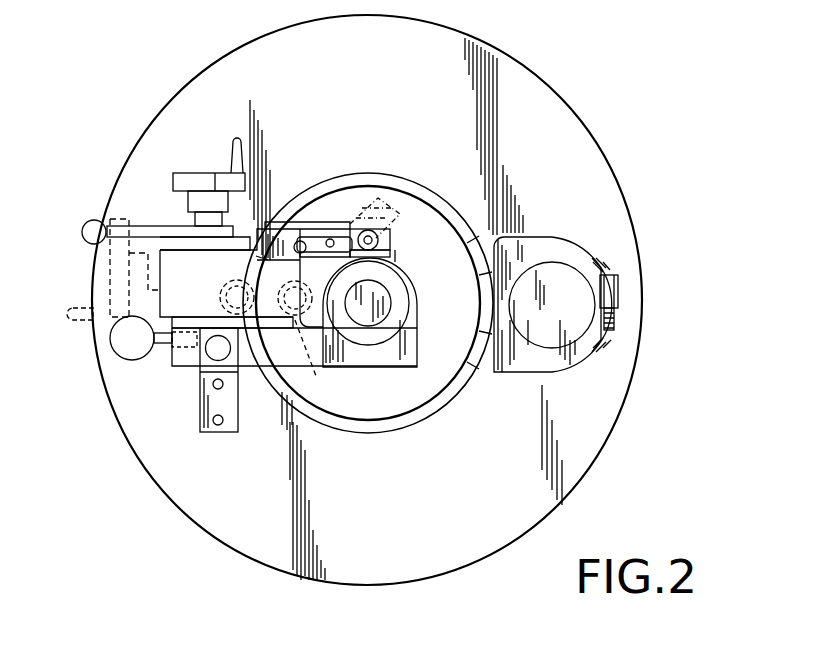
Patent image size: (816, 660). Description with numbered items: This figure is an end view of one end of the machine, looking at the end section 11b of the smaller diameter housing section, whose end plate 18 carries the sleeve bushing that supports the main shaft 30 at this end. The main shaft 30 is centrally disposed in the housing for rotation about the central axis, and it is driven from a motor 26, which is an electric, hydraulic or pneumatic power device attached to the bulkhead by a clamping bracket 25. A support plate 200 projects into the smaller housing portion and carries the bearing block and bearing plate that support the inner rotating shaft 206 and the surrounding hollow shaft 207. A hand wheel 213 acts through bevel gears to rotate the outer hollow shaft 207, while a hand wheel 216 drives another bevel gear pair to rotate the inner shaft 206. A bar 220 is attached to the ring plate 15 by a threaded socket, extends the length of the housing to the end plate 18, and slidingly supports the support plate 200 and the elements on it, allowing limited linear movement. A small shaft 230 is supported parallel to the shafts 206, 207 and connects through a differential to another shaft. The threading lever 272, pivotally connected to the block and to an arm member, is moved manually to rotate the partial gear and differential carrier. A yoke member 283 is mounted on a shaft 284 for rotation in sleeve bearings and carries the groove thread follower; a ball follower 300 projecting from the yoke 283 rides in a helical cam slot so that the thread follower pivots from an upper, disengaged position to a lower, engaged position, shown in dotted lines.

The ring plate 15 is at (600, 403).
The end section 11b is at (438, 204).
The end plate 18 is at (372, 356).
The main shaft 30 is at (400, 302).
The clamping bracket 25 is at (568, 250).
The motor 26 is at (566, 310).
The threading lever 272 is at (150, 226).
The hand wheel 216 is at (209, 182).
The rotating shaft 206 is at (225, 278).
The hollow shaft 207 is at (225, 297).
The support plate 200 is at (260, 326).
The small shaft 230 is at (317, 355).
The bar 220 is at (212, 348).
The hand wheel 213 is at (160, 280).
The ball follower 300 is at (299, 241).
The shaft 284 is at (330, 239).
The yoke member 283 is at (366, 229).